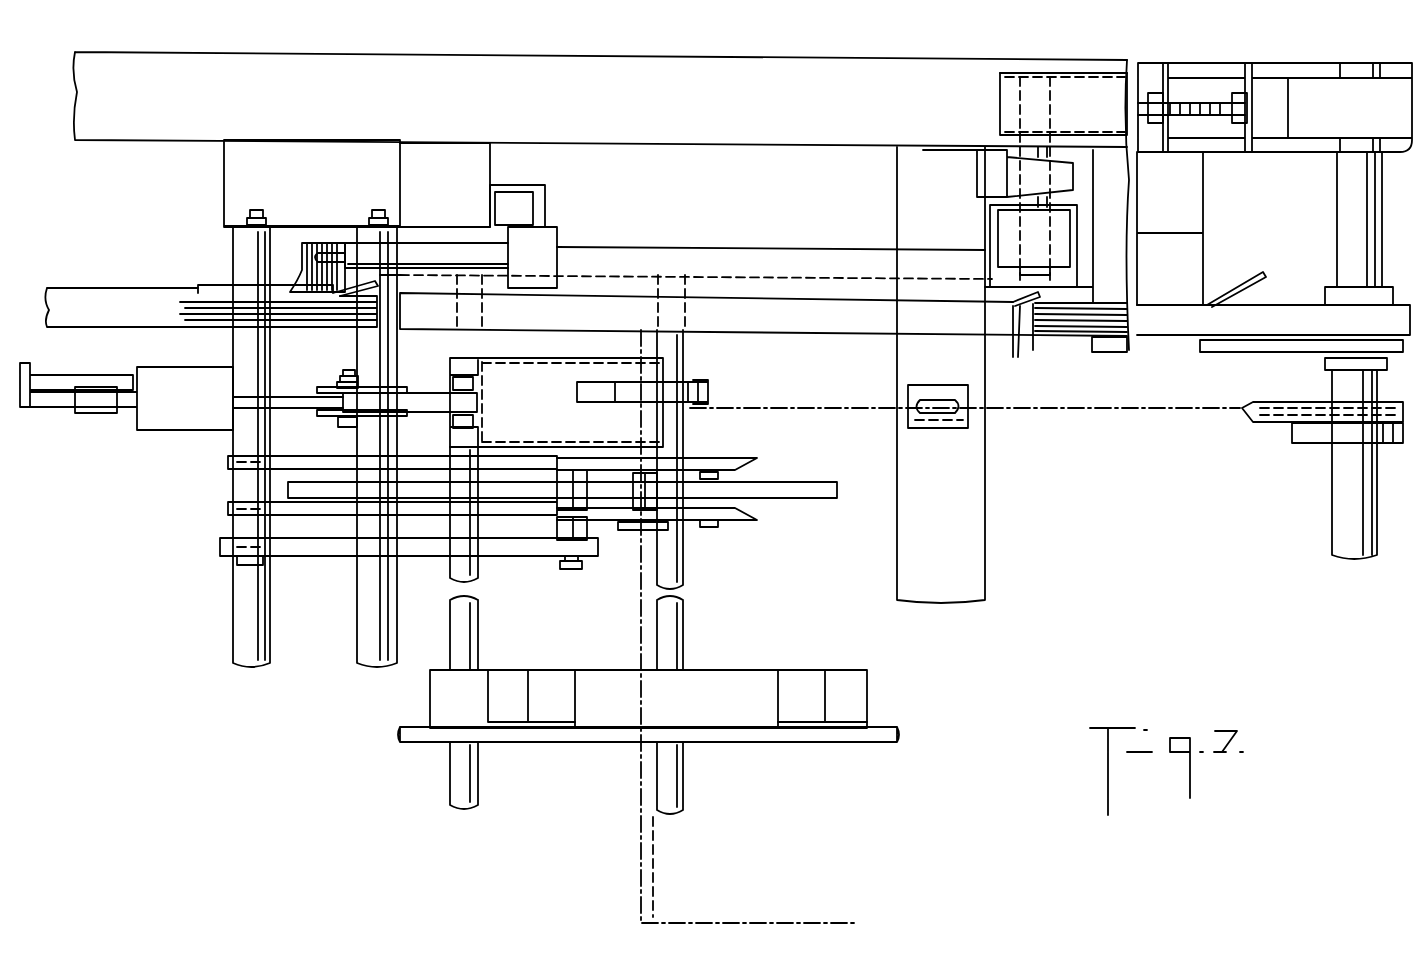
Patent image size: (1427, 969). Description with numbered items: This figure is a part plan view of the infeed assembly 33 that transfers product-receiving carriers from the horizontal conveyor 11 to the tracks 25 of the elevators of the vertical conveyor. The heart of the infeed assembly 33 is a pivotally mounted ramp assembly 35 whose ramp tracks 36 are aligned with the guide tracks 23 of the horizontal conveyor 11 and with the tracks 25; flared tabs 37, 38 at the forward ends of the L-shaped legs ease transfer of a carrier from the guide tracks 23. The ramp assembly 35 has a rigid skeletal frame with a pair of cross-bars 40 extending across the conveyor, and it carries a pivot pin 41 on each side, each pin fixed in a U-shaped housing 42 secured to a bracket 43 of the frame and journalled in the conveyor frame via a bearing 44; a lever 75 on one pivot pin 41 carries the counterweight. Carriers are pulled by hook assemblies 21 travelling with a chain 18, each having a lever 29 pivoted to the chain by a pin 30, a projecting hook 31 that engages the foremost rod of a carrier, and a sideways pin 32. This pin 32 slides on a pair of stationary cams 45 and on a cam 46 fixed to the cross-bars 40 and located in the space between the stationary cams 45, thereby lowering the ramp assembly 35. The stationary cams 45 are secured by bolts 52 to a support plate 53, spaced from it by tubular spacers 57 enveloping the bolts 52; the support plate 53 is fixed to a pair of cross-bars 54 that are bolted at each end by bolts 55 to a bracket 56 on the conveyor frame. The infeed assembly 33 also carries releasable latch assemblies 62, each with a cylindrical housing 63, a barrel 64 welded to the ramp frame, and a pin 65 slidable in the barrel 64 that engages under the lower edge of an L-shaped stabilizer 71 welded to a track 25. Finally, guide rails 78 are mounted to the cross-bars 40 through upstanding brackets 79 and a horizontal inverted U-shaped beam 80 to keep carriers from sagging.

The horizontal conveyor 11 is at (1355, 50).
The chain 18 is at (957, 407).
The hook assembly 21 is at (565, 350).
The guide track 23 is at (1288, 305).
The track 25 is at (136, 300).
The lever 29 is at (425, 400).
The pin 30 is at (347, 370).
The hook 31 is at (705, 386).
The pin 32 is at (633, 531).
The infeed assembly 33 is at (737, 232).
The ramp assembly 35 is at (871, 348).
The ramp track 36 is at (767, 318).
The flared tab 37 is at (1040, 332).
The flared tab 38 is at (1020, 322).
The cross-bar 40 is at (479, 630).
The pivot pin 41 is at (1035, 78).
The U-shaped housing 42 is at (1005, 228).
The bracket 43 is at (1070, 279).
The bearing 44 is at (1005, 180).
The stationary cam 45 is at (728, 462).
The cam 46 is at (822, 488).
The bolt 52 is at (235, 561).
The support plate 53 is at (315, 550).
The cross-bar 54 is at (270, 631).
The bolt 55 is at (382, 210).
The bracket 56 is at (236, 190).
The tubular spacer 57 is at (232, 480).
The latch assembly 62 is at (582, 239).
The cylindrical housing 63 is at (545, 258).
The barrel 64 is at (446, 245).
The pin 65 is at (327, 250).
The stabilizer 71 is at (222, 286).
The lever 75 is at (1090, 78).
The guide rail 78 is at (738, 742).
The upstanding bracket 79 is at (565, 680).
The horizontal inverted U-shaped beam 80 is at (745, 670).